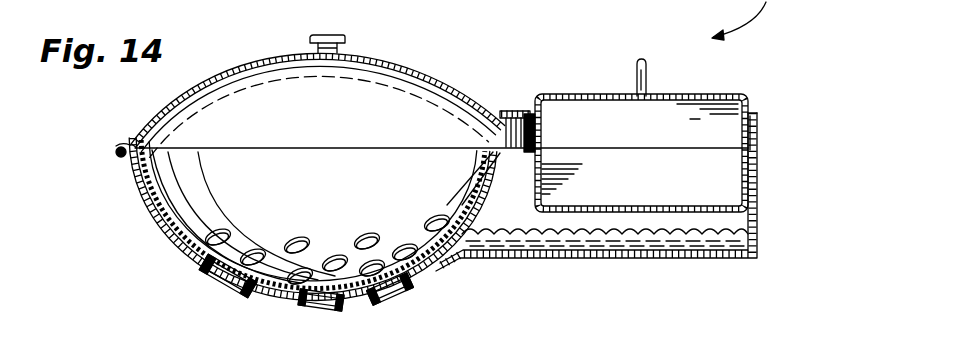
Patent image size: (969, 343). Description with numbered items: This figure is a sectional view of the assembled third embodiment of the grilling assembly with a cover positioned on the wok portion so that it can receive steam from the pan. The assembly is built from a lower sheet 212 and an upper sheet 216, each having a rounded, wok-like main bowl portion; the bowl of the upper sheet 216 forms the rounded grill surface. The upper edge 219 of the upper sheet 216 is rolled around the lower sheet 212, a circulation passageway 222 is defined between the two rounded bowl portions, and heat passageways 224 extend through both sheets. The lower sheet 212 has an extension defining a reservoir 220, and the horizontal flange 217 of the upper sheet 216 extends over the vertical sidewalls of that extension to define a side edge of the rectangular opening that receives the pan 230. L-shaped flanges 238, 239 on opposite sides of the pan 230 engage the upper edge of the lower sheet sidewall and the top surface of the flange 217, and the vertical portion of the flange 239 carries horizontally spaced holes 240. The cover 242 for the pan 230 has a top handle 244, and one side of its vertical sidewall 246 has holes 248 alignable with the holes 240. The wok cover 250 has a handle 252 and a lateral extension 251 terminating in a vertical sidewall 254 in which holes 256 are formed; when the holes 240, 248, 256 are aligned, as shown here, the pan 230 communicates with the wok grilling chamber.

The lower sheet 212 is at (162, 240).
The upper sheet 216 is at (153, 221).
The horizontal flange 217 is at (490, 176).
The upper edge 219 is at (116, 153).
The reservoir 220 is at (744, 224).
The circulation passageway 222 is at (400, 294).
The heat passageways 224 is at (205, 265).
The pan 230 is at (655, 213).
The L-shaped flange 238 is at (753, 117).
The L-shaped flange 239 is at (533, 133).
The holes 240 is at (532, 130).
The cover 242 is at (606, 92).
The top handle 244 is at (648, 72).
The vertical sidewall 246 is at (540, 148).
The holes 248 is at (543, 131).
The cover 250 is at (186, 93).
The lateral extension 251 is at (490, 121).
The handle 252 is at (340, 36).
The vertical sidewall 254 is at (486, 151).
The holes 256 is at (496, 137).